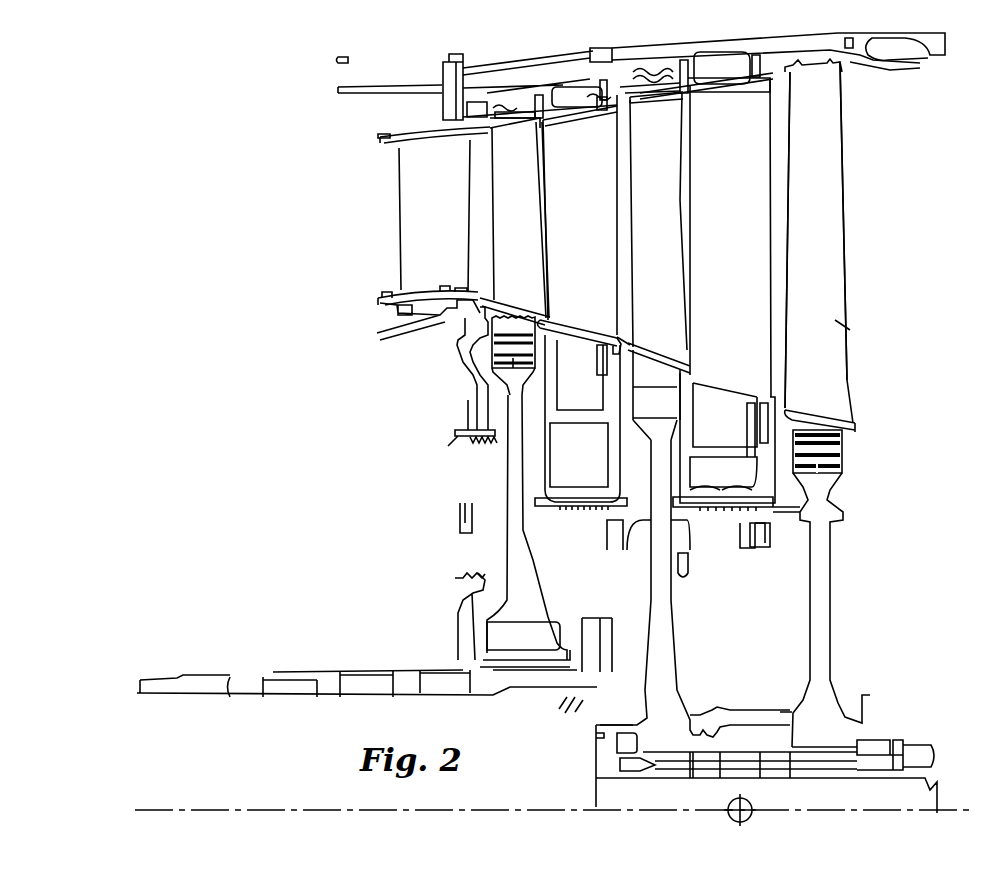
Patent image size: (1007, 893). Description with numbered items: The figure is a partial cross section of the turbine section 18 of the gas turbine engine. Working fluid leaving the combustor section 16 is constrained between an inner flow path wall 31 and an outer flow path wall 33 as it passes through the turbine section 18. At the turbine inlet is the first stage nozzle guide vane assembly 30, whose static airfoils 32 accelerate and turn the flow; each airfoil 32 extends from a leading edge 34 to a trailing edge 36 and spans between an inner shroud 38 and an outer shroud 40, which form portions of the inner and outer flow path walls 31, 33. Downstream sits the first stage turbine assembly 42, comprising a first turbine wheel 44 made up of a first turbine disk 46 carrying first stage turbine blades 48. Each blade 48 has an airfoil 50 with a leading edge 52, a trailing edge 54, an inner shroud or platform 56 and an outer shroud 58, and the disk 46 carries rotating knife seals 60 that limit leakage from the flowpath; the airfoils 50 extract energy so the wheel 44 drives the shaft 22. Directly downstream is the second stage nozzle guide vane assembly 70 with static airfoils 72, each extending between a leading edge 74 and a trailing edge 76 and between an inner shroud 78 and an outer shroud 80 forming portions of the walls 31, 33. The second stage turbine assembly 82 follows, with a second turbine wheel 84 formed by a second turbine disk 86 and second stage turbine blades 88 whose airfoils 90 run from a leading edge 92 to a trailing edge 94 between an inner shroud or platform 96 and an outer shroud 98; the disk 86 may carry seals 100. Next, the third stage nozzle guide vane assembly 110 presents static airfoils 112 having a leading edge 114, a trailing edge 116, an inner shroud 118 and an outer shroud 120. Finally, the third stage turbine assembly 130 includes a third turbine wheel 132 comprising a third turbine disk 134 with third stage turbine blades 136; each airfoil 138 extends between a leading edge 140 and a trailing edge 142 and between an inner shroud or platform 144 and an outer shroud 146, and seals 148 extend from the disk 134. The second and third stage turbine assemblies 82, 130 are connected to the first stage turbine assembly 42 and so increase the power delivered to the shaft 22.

The combustor section 16 is at (158, 291).
The turbine section 18 is at (286, 140).
The shaft 22 is at (250, 696).
The first stage nozzle guide vane assembly 30 is at (376, 233).
The inner flow path wall 31 is at (401, 313).
The static vane or airfoil 32 is at (420, 216).
The outer flow path wall 33 is at (383, 143).
The leading edge 34 is at (397, 252).
The trailing edge 36 is at (455, 232).
The inner shroud 38 is at (413, 283).
The outer shroud 40 is at (418, 148).
The first stage turbine assembly 42 is at (483, 295).
The first turbine wheel 44 is at (485, 531).
The first turbine disk 46 is at (515, 525).
The first stage turbine blade 48 is at (520, 152).
The airfoil 50 is at (478, 231).
The leading edge 52 is at (494, 240).
The trailing edge 54 is at (537, 264).
The inner shroud or platform 56 is at (500, 298).
The outer shroud 58 is at (514, 138).
The seal 60 is at (456, 441).
The second stage nozzle guide vane assembly 70 is at (603, 131).
The static vane or airfoil 72 is at (581, 302).
The leading edge 74 is at (550, 262).
The trailing edge 76 is at (598, 334).
The inner shroud 78 is at (564, 327).
The outer shroud 80 is at (563, 120).
The second stage turbine assembly 82 is at (671, 120).
The second turbine wheel 84 is at (653, 548).
The second turbine disk 86 is at (669, 588).
The second stage turbine blade 88 is at (676, 239).
The airfoil 90 is at (653, 266).
The leading edge 92 is at (641, 255).
The trailing edge 94 is at (668, 278).
The inner shroud or platform 96 is at (645, 344).
The outer shroud 98 is at (650, 103).
The seal 100 is at (597, 520).
The third stage nozzle guide vane assembly 110 is at (745, 113).
The static vane or airfoil 112 is at (736, 295).
The leading edge 114 is at (697, 308).
The trailing edge 116 is at (756, 221).
The inner shroud 118 is at (735, 377).
The outer shroud 120 is at (712, 87).
The third stage turbine assembly 130 is at (850, 134).
The third turbine wheel 132 is at (790, 610).
The third turbine disk 134 is at (802, 734).
The third stage turbine blade 136 is at (838, 240).
The airfoil 138 is at (860, 266).
The leading edge 140 is at (787, 293).
The trailing edge 142 is at (845, 315).
The inner shroud or platform 144 is at (808, 408).
The outer shroud 146 is at (815, 75).
The seal 148 is at (740, 523).